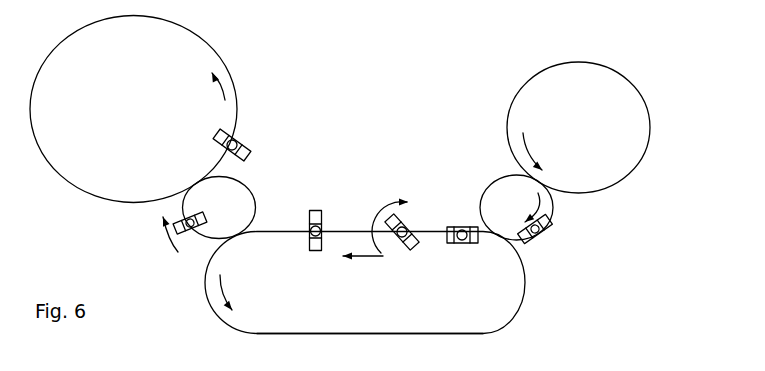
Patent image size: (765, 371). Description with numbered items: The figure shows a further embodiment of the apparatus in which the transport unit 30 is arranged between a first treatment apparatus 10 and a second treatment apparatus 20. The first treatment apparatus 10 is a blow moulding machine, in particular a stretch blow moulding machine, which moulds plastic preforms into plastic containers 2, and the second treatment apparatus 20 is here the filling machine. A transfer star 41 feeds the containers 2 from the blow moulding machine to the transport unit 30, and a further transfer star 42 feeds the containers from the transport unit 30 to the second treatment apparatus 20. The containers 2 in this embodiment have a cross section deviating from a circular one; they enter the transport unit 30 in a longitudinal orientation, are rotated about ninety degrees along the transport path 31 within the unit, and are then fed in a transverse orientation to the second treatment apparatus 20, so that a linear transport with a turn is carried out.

The container 2 is at (320, 211).
The first treatment apparatus 10 is at (620, 160).
The second treatment apparatus 20 is at (217, 65).
The transport unit 30 is at (520, 293).
The transport path 31 is at (320, 333).
The transfer star 41 is at (492, 183).
The further transfer star 42 is at (228, 189).